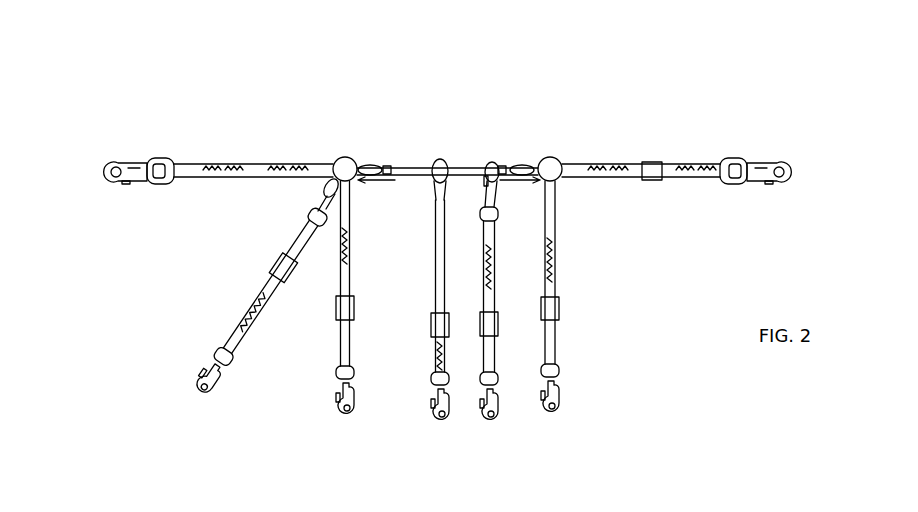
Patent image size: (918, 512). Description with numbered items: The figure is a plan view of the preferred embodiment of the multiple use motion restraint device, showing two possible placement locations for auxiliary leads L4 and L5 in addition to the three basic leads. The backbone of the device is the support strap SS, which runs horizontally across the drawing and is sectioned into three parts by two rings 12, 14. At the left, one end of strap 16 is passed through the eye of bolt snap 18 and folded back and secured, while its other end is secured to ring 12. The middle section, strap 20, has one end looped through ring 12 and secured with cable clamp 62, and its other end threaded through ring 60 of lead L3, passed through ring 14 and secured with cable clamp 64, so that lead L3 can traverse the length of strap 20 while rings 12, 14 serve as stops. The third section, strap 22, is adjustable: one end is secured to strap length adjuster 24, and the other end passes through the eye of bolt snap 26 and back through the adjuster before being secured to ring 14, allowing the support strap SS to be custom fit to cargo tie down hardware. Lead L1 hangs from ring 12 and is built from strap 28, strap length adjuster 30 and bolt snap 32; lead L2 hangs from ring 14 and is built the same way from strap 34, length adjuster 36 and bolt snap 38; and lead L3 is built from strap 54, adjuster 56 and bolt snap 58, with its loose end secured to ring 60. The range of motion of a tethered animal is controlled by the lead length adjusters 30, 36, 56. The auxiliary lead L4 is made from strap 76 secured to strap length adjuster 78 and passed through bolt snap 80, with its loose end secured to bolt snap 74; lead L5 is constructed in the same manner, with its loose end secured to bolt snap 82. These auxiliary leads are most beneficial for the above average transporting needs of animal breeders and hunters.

The support strap SS is at (218, 141).
The ring 12 is at (334, 160).
The ring 14 is at (561, 162).
The strap 16 is at (248, 168).
The bolt snap 18 is at (98, 163).
The strap 20 is at (478, 170).
The strap 22 is at (608, 168).
The strap length adjuster 24 is at (658, 164).
The bolt snap 26 is at (800, 163).
The strap 28 is at (351, 231).
The strap length adjuster 30 is at (353, 306).
The bolt snap 32 is at (338, 406).
The strap 34 is at (558, 237).
The strap length adjuster 36 is at (560, 305).
The bolt snap 38 is at (563, 407).
The strap 54 is at (436, 268).
The strap length adjuster 56 is at (432, 324).
The bolt snap 58 is at (433, 418).
The ring 60 is at (431, 177).
The cable clamp 62 is at (393, 166).
The cable clamp 64 is at (506, 170).
The bolt snap 74 is at (498, 185).
The strap 76 is at (497, 263).
The strap length adjuster 78 is at (499, 320).
The bolt snap 80 is at (500, 410).
The bolt snap 82 is at (324, 193).
The lead L1 is at (346, 444).
The lead L2 is at (551, 442).
The lead L3 is at (440, 450).
The auxiliary lead L4 is at (490, 446).
The auxiliary lead L5 is at (207, 413).